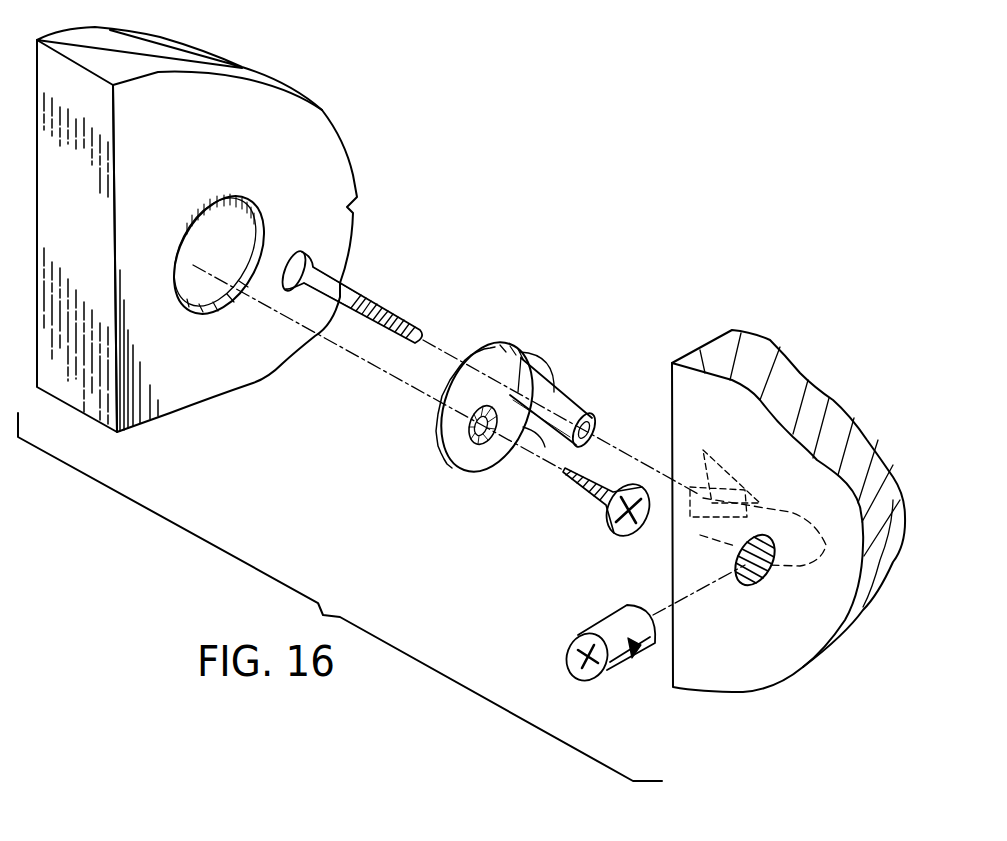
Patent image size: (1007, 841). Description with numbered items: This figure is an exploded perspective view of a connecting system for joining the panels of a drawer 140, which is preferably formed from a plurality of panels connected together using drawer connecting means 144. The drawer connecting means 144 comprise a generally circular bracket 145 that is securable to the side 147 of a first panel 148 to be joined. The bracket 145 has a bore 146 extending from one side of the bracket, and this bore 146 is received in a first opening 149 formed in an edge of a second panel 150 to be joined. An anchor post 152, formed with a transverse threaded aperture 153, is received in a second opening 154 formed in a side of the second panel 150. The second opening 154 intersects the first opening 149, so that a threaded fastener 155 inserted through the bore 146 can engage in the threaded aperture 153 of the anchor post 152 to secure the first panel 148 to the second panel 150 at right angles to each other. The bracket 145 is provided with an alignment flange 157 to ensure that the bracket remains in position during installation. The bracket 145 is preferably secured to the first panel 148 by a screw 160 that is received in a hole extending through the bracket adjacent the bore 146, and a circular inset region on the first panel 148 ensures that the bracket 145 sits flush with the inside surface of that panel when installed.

The drawer 140 is at (612, 250).
The drawer connecting means 144 is at (532, 336).
The bracket 145 is at (497, 457).
The bore 146 is at (563, 410).
The side 147 is at (236, 367).
The first panel 148 is at (330, 162).
The first opening 149 is at (795, 530).
The second panel 150 is at (690, 410).
The anchor post 152 is at (590, 623).
The threaded aperture 153 is at (635, 653).
The second opening 154 is at (787, 550).
The screw 155 is at (343, 293).
The alignment flange 157 is at (552, 386).
The screw 160 is at (593, 500).